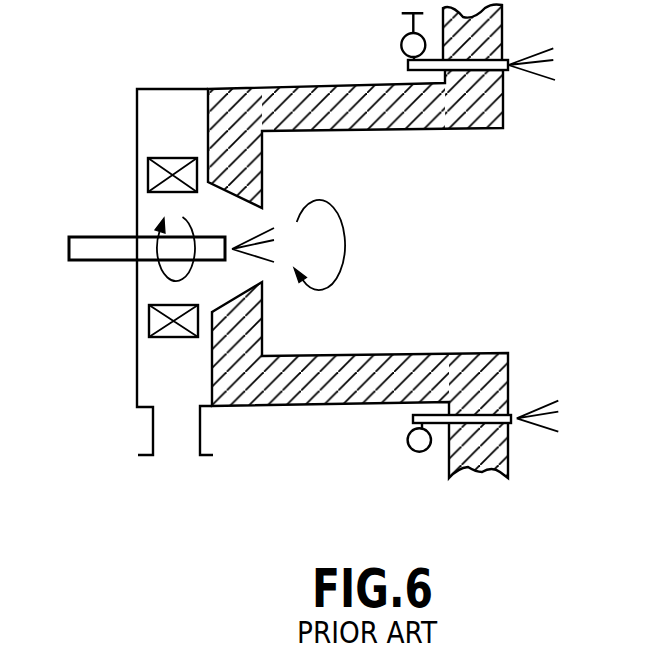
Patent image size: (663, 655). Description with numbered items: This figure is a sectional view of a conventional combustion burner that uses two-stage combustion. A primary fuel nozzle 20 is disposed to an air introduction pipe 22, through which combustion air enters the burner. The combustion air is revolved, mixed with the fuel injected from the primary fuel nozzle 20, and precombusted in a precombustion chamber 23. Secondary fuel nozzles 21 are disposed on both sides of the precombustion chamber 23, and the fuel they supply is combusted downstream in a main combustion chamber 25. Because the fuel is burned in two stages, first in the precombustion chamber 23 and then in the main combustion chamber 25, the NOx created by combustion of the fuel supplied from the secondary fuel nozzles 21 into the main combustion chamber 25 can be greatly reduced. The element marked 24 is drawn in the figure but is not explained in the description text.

The primary fuel nozzle 20 is at (103, 262).
The secondary fuel nozzles 21 is at (441, 425).
The air introduction pipe 22 is at (177, 457).
The precombustion chamber 23 is at (327, 318).
The coils 24 is at (163, 338).
The main combustion chamber 25 is at (497, 248).